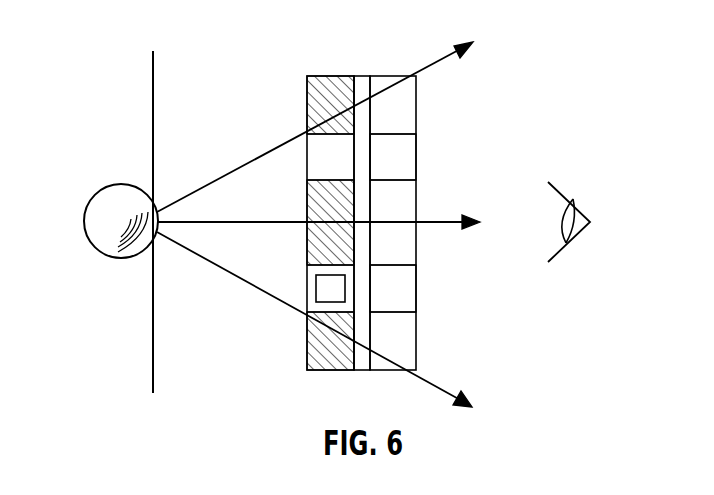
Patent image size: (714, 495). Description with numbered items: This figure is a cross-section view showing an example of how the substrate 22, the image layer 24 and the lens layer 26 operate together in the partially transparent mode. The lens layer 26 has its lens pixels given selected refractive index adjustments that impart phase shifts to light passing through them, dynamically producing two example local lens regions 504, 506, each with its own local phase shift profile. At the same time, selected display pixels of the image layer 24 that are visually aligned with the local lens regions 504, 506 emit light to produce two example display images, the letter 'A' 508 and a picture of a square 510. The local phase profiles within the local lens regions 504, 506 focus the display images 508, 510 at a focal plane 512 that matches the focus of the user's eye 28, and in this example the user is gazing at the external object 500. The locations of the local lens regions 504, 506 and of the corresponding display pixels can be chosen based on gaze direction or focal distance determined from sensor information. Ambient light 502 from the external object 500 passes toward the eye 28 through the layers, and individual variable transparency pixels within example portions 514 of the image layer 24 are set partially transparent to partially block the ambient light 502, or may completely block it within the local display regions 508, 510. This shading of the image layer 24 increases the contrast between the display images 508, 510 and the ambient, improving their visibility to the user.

The substrate 22 is at (362, 75).
The image layer 24 is at (310, 75).
The lens layer 26 is at (418, 108).
The viewer eye 28 is at (578, 210).
The external object 500 is at (94, 221).
The ambient light 502 is at (243, 166).
The local lens region 504 is at (405, 147).
The local lens region 506 is at (403, 283).
The display image of the letter 'A' 508 is at (308, 170).
The display image of a square 510 is at (315, 288).
The focal plane 512 is at (153, 96).
The portions of the image layer 514 is at (318, 88).